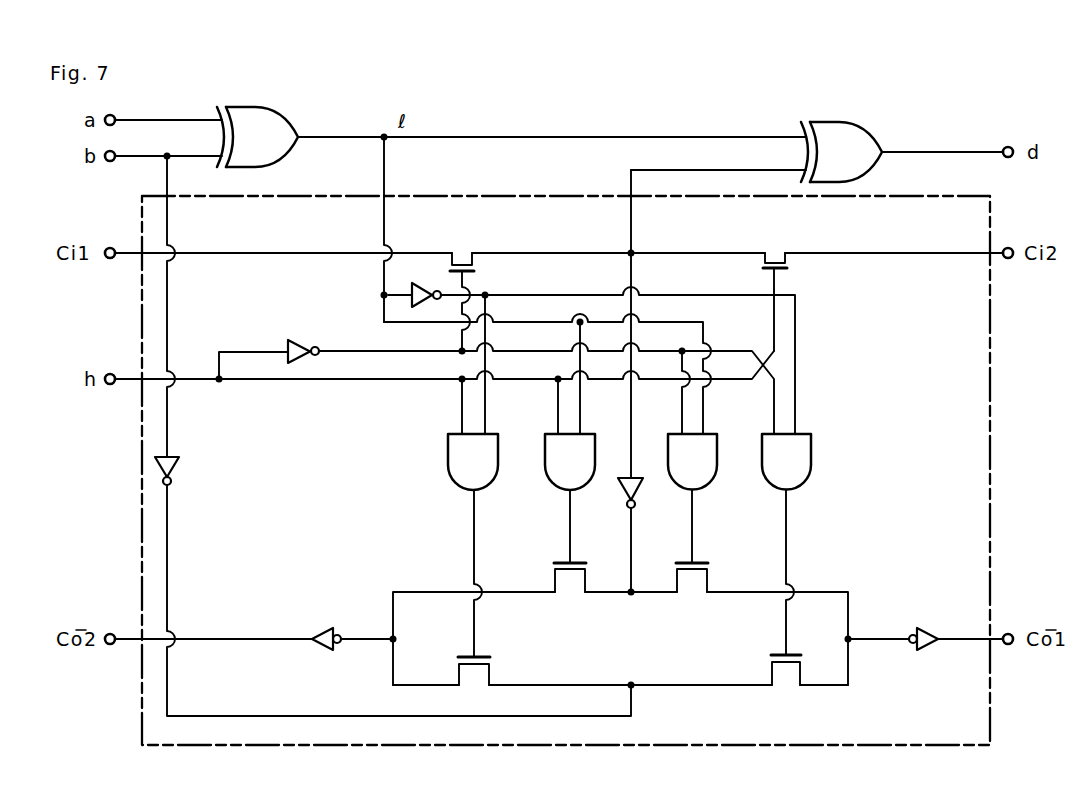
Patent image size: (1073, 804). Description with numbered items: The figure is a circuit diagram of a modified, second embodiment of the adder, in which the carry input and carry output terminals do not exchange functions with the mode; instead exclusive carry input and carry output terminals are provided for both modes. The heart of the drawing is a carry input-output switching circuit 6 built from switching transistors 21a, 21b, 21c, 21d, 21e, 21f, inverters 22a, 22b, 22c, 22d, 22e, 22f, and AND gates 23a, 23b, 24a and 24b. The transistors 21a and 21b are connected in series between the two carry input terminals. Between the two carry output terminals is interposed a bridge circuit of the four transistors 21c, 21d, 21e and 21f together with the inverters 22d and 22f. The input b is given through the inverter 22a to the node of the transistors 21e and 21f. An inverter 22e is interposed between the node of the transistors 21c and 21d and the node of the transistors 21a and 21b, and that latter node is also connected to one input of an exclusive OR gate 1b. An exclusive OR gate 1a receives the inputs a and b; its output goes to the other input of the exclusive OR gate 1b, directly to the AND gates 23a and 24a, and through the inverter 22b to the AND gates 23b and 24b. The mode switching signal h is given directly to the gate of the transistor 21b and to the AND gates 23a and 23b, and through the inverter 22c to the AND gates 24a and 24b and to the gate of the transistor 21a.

The exclusive OR gate 1a is at (284, 113).
The exclusive OR gate 1b is at (868, 124).
The carry input-output switching circuit 6 is at (990, 213).
The switching transistor 21a is at (468, 248).
The switching transistor 21b is at (778, 247).
The transistor 21c is at (571, 597).
The transistor 21d is at (691, 597).
The transistor 21e is at (489, 657).
The transistor 21f is at (787, 687).
The inverter 22a is at (181, 469).
The inverter 22b is at (424, 284).
The inverter 22c is at (312, 342).
The inverter 22d is at (331, 628).
The inverter 22e is at (628, 499).
The inverter 22f is at (931, 630).
The AND gate 23a is at (548, 481).
The AND gate 23b is at (452, 484).
The AND gate 24a is at (709, 478).
The AND gate 24b is at (812, 478).